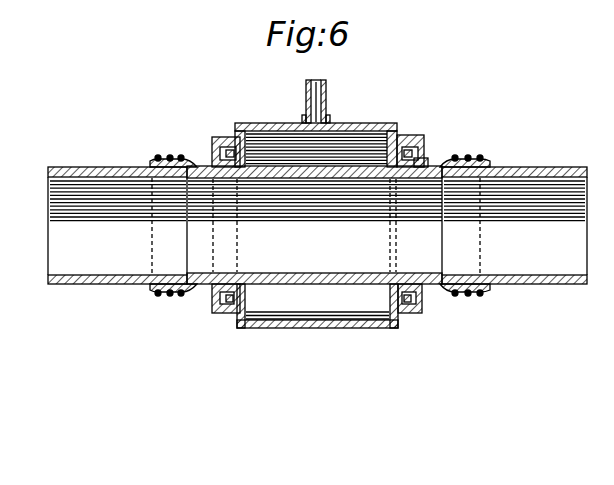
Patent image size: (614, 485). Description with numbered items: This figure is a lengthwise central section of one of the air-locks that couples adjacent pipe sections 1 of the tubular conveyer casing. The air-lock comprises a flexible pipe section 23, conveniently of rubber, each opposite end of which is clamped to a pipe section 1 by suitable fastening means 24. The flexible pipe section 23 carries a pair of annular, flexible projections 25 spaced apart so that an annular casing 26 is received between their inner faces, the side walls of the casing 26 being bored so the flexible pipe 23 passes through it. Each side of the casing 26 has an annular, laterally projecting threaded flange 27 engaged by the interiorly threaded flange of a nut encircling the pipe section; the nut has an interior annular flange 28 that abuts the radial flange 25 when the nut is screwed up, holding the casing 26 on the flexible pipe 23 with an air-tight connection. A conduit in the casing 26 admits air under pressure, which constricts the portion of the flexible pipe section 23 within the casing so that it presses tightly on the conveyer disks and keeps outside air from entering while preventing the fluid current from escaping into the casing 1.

The pipe section 1 is at (82, 167).
The flexible pipe section 23 is at (315, 280).
The fastening means 24 is at (169, 158).
The annular flexible projection 25 is at (214, 315).
The annular casing 26 is at (372, 123).
The threaded flange 27 is at (228, 137).
The interior annular flange 28 is at (423, 160).